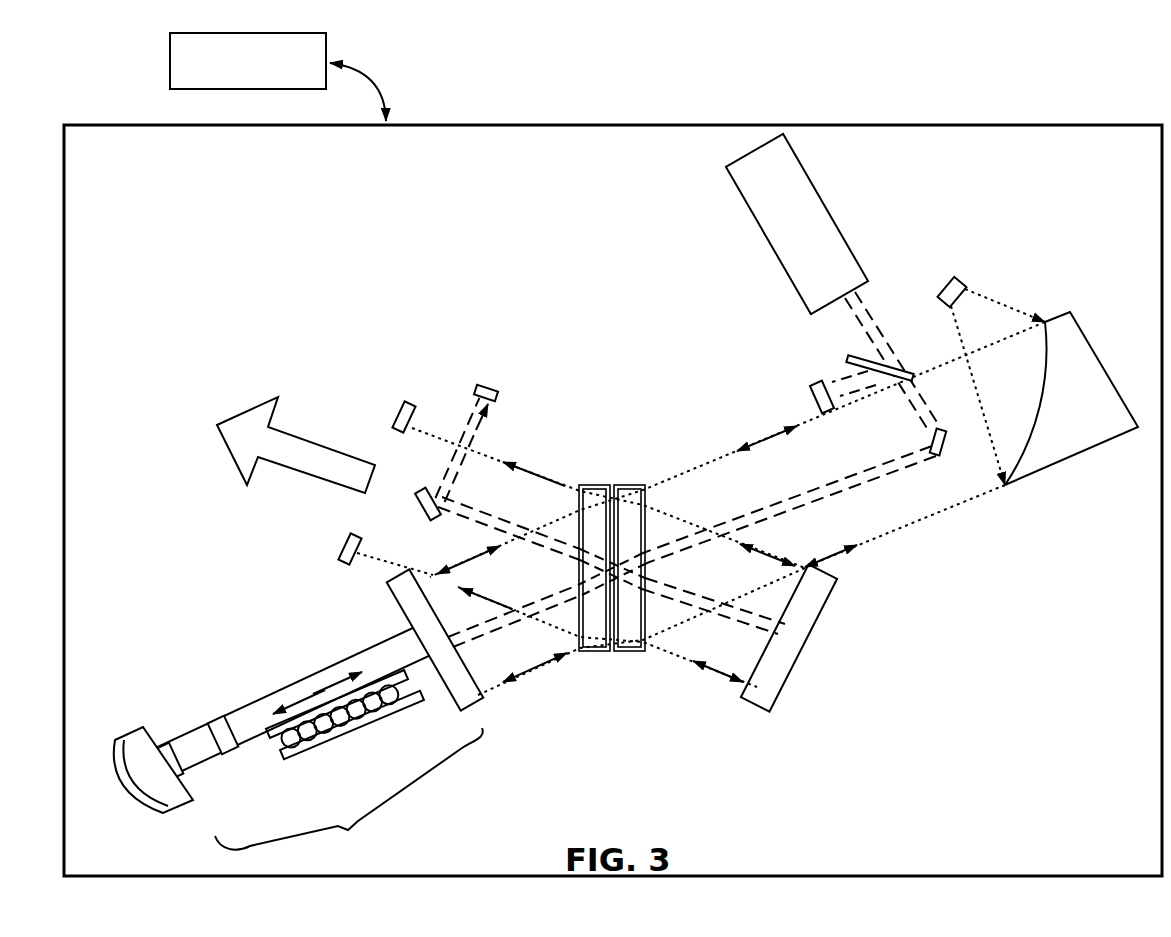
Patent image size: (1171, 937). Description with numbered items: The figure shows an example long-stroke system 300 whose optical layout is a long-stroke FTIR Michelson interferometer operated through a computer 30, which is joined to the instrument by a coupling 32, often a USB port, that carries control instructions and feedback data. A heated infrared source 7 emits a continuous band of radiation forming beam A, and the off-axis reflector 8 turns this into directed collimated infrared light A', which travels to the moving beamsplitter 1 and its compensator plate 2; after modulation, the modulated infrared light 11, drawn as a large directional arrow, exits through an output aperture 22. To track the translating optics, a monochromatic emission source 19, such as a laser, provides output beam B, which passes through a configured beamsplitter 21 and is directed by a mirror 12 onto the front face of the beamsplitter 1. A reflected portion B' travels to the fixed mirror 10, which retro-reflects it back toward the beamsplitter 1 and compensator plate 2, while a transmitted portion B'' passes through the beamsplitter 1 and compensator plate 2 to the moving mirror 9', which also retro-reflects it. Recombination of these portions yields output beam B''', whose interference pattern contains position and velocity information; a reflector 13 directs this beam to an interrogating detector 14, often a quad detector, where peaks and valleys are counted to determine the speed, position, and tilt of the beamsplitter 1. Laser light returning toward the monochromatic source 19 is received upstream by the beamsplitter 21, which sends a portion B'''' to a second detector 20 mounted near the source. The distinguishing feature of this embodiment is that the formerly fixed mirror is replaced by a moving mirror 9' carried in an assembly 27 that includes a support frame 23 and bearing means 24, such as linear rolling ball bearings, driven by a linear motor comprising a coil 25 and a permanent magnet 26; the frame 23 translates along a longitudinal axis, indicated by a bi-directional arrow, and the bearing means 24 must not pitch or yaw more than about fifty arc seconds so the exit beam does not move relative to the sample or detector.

The long-stroke system 300 is at (253, 193).
The computer 30 is at (237, 62).
The coupling 32 is at (378, 83).
The monochromatic emission source 19 is at (822, 200).
The heated infrared source 7 is at (962, 283).
The off-axis reflector 8 is at (1098, 352).
The beamsplitter 21 is at (905, 364).
The second detector 20 is at (809, 393).
The mirror 12 is at (944, 447).
The reflector 13 is at (417, 509).
The interrogating detector 14 is at (480, 386).
The output aperture 22 is at (404, 402).
The modulated infrared light 11 is at (227, 450).
The moving beamsplitter 1 is at (622, 623).
The compensator plate 2 is at (588, 623).
The moving mirror 9' is at (459, 654).
The fixed mirror 10 is at (787, 687).
The support frame 23 is at (338, 661).
The bearing means 24 is at (350, 732).
The coil 25 is at (177, 807).
The permanent magnet 26 is at (195, 732).
The moving mirror assembly 27 is at (349, 795).
The beam A is at (998, 385).
The directed collimated infrared light A' is at (701, 508).
The output beam B is at (759, 443).
The reflected beam portion B' is at (713, 621).
The transmitted beam portion B'' is at (515, 605).
The output beam B''' is at (536, 484).
The returning beam portion B'''' is at (837, 364).